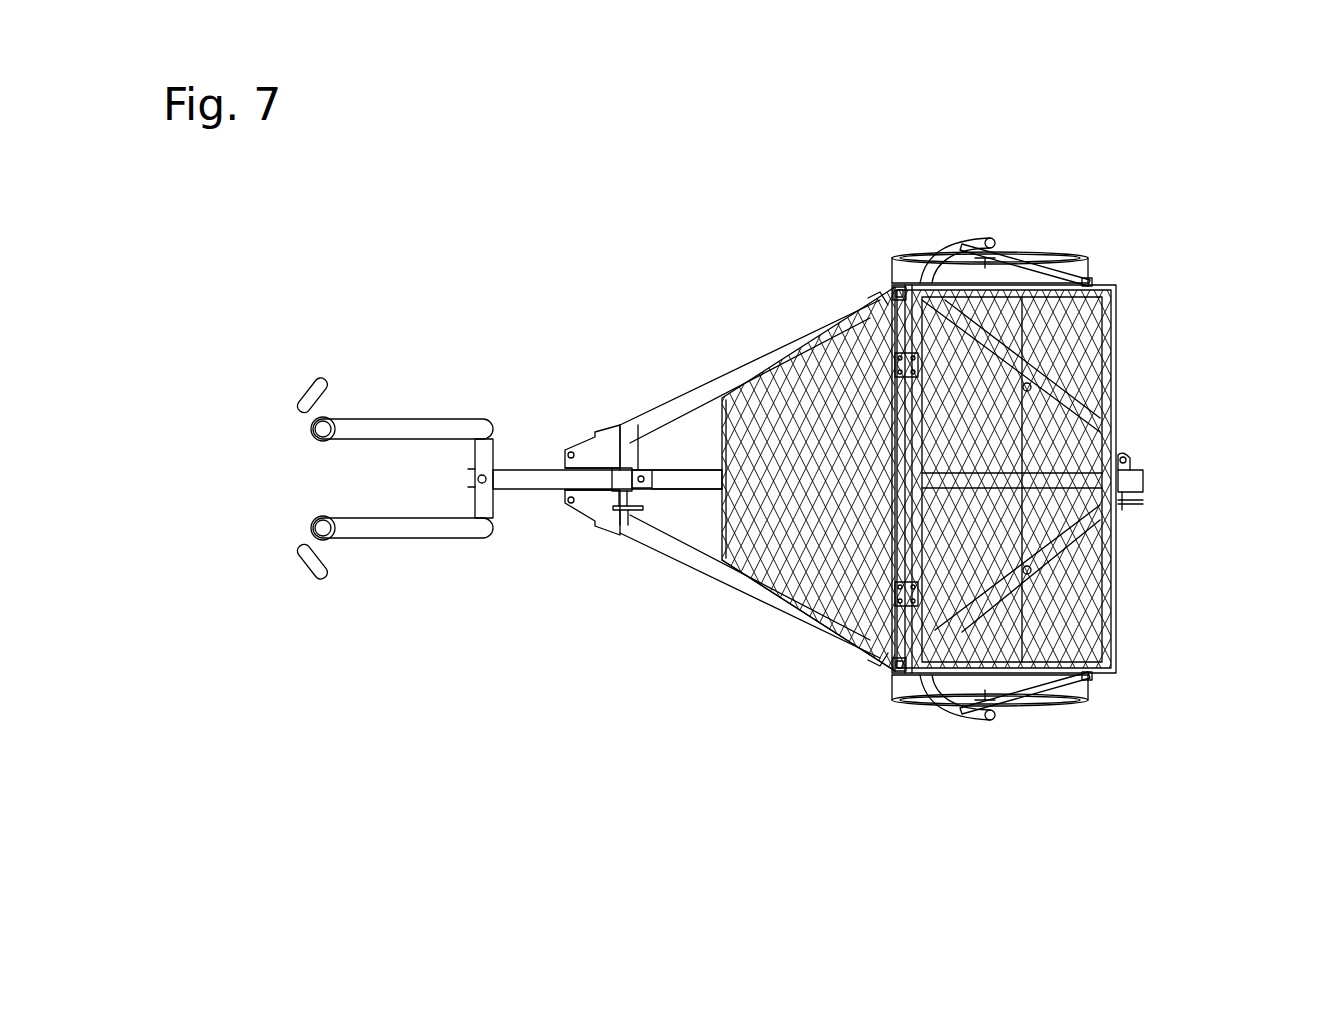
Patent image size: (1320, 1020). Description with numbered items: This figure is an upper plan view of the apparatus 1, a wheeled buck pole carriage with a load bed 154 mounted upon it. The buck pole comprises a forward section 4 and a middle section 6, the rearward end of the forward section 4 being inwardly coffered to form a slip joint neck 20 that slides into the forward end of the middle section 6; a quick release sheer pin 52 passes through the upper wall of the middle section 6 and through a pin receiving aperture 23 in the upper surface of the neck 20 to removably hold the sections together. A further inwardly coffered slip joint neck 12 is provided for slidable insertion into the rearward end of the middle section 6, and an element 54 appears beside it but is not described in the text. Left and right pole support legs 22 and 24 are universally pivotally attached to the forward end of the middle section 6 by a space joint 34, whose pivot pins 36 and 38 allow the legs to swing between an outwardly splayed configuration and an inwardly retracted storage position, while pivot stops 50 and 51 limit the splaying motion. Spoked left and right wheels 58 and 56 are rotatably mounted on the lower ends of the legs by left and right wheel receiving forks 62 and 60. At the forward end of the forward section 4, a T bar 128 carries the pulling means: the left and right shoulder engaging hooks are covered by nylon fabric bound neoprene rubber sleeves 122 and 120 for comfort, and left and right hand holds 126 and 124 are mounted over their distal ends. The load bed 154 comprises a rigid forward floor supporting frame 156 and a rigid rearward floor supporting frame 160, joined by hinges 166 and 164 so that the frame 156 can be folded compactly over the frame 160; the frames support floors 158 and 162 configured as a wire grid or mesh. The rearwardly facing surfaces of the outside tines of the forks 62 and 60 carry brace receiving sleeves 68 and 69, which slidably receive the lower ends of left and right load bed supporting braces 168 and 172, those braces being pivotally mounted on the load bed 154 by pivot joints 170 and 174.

The cart 1 is at (538, 628).
The forward section 4 is at (525, 485).
The middle section 6 is at (691, 490).
The slip joint neck 12 is at (1145, 478).
The slip joint neck 20 is at (632, 518).
The left pole support leg 22 is at (723, 570).
The pin receiving aperture 23 is at (638, 420).
The right pole support leg 24 is at (757, 362).
The space joint 34 is at (585, 415).
The pivot pin 36 is at (569, 505).
The pivot pin 38 is at (565, 450).
The pivot stop 50 is at (604, 535).
The pivot stop 51 is at (612, 424).
The quick release sheer pin 52 is at (628, 512).
The latch keeper 54 is at (1143, 503).
The right wheel 56 is at (893, 270).
The left wheel 58 is at (898, 690).
The right wheel receiving fork 60 is at (925, 248).
The left wheel receiving fork 62 is at (920, 700).
The brace receiving sleeve 68 is at (975, 715).
The brace receiving sleeve 69 is at (982, 243).
The neoprene rubber sleeve 120 is at (410, 425).
The neoprene rubber sleeve 122 is at (400, 530).
The right hand hold 124 is at (318, 398).
The left hand hold 126 is at (300, 548).
The T bar 128 is at (486, 455).
The load bed 154 is at (998, 489).
The forward floor supporting frame 156 is at (708, 440).
The floor 158 is at (850, 578).
The rearward floor supporting frame 160 is at (1115, 380).
The floor 162 is at (1075, 330).
The hinge 164 is at (893, 360).
The hinge 166 is at (893, 598).
The left load bed supporting brace 168 is at (1015, 720).
The pivot joint 170 is at (1100, 692).
The right load bed supporting brace 172 is at (1012, 255).
The pivot joint 174 is at (1092, 280).